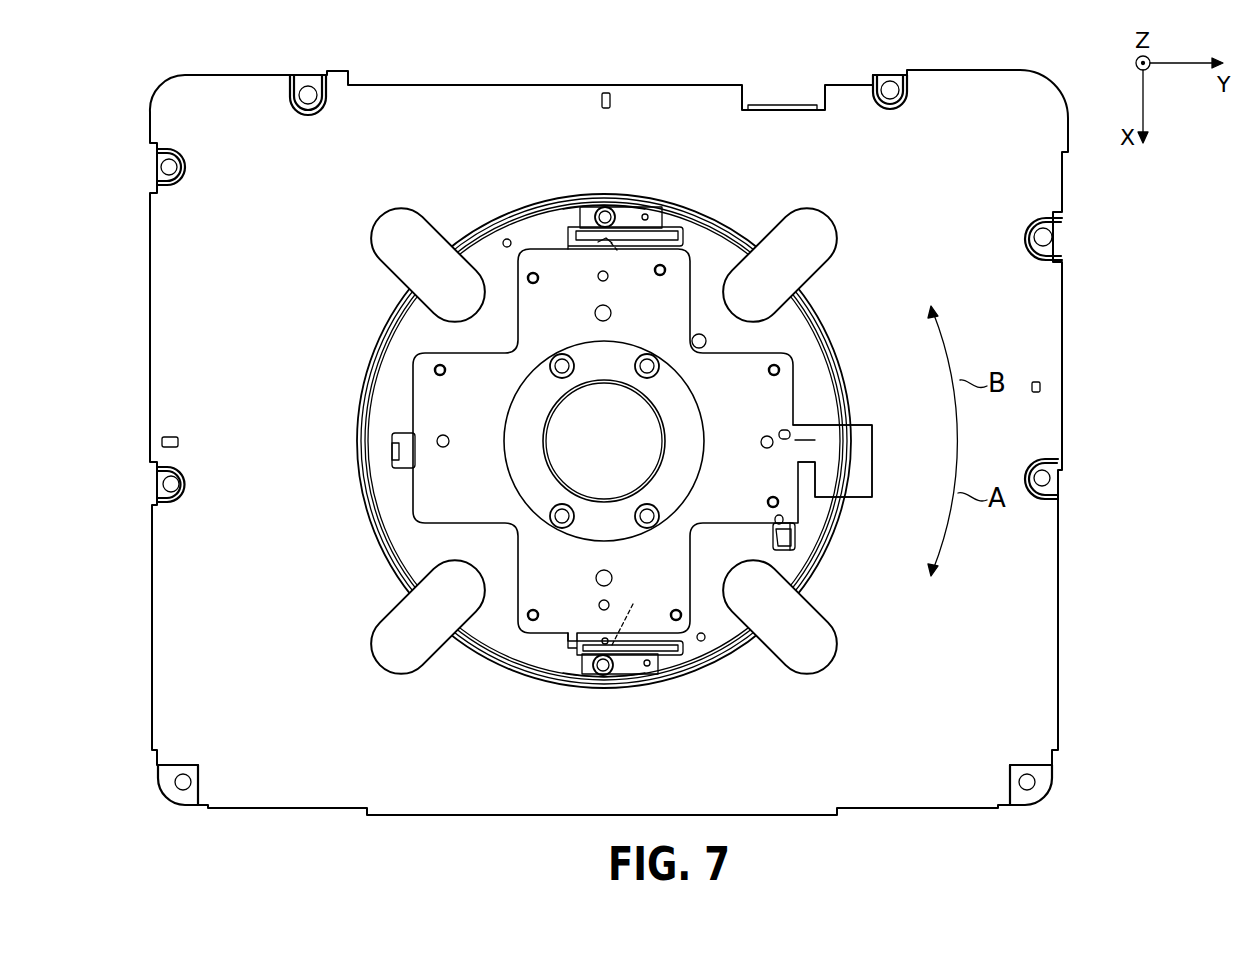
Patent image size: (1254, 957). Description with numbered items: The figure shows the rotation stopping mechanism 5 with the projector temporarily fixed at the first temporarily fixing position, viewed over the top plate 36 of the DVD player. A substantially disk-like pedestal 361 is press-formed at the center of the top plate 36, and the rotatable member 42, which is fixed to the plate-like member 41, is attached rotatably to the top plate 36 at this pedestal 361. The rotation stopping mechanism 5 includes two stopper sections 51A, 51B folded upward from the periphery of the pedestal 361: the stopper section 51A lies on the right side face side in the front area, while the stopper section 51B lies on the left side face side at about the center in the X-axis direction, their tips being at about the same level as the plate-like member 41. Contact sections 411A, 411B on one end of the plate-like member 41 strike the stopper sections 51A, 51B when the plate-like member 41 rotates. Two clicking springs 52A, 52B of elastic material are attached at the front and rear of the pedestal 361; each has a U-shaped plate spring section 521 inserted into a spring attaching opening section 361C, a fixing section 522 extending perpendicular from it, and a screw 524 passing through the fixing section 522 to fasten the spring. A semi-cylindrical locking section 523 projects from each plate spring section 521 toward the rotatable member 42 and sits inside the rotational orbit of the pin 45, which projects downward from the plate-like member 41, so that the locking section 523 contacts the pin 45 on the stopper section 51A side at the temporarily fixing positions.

The top plate 36 is at (1038, 95).
The rotation stopping mechanism 5 is at (860, 270).
The plate-like member 41 is at (748, 352).
The rotatable member 42 is at (501, 395).
The pin 45 is at (602, 642).
The stopper section 51A is at (796, 542).
The stopper section 51B is at (390, 455).
The clicking spring 52A is at (693, 652).
The clicking spring 52B is at (696, 232).
The plate spring section 521 is at (672, 227).
The fixing section 522 is at (626, 210).
The locking section 523 is at (615, 250).
The screw 524 is at (600, 206).
The pedestal 361 is at (838, 398).
The spring attaching opening section 361C is at (565, 238).
The contact section 411A is at (788, 527).
The contact section 411B is at (818, 446).